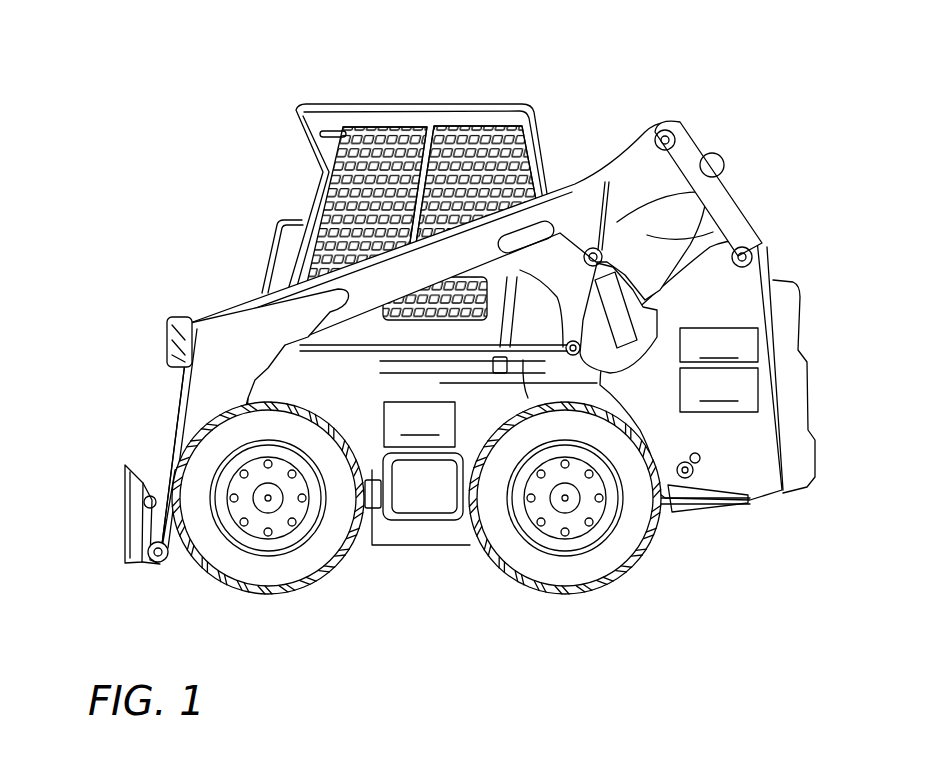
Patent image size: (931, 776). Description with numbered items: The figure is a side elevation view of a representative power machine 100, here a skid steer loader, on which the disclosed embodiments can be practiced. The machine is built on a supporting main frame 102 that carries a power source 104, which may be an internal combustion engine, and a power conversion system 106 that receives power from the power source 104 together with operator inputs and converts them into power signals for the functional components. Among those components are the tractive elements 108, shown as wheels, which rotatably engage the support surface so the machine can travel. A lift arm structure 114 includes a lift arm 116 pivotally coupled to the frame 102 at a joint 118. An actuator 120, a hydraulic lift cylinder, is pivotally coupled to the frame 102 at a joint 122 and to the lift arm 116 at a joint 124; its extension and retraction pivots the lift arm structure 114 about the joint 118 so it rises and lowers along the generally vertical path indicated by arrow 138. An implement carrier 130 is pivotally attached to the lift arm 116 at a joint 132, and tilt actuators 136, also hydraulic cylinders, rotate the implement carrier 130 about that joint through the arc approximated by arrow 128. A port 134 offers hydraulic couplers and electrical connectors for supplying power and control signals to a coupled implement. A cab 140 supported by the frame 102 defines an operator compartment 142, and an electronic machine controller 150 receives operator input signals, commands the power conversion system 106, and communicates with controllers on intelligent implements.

The power machine 100 is at (176, 151).
The main frame 102 is at (373, 535).
The power source 104 is at (719, 345).
The power conversion system 106 is at (719, 390).
The tractive elements 108 is at (315, 594).
The lift arm structure 114 is at (623, 125).
The lift arm 116 is at (272, 318).
The joint 118 is at (755, 232).
The actuator 120 is at (705, 188).
The joint 122 is at (688, 485).
The joint 124 is at (605, 205).
The arrow 128 is at (183, 614).
The implement carrier 130 is at (122, 507).
The joint 132 is at (167, 562).
The port 134 is at (183, 322).
The actuators 136 is at (163, 462).
The arrow 138 is at (135, 278).
The cab 140 is at (422, 105).
The operator compartment 142 is at (280, 211).
The electronic machine controller 150 is at (419, 424).